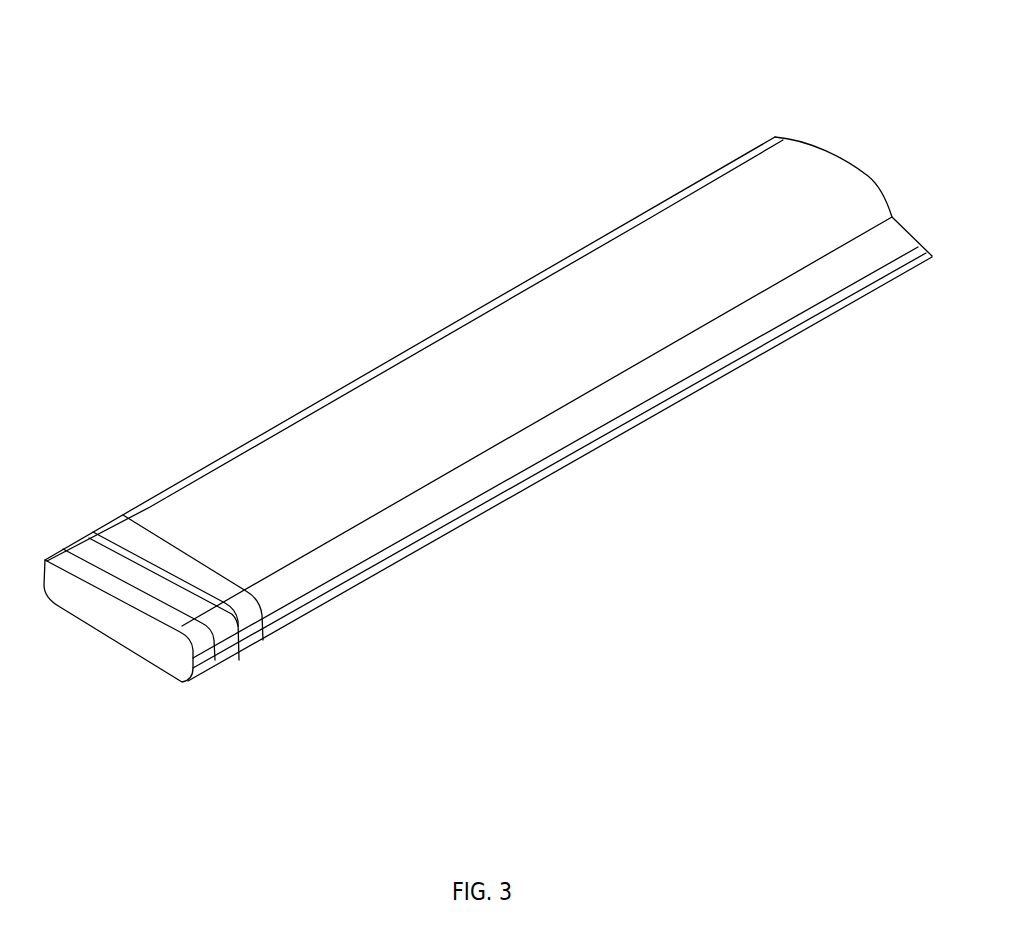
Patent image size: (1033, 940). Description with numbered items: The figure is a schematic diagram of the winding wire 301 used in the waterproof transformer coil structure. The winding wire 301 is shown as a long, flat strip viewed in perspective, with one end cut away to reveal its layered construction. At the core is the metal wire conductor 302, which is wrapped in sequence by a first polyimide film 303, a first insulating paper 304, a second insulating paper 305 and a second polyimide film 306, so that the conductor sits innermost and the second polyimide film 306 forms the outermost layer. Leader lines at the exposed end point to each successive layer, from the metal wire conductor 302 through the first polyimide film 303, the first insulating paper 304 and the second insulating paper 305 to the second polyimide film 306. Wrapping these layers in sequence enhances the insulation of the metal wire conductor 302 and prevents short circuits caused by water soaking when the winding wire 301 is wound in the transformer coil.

The winding wire 301 is at (493, 229).
The metal wire conductor 302 is at (212, 668).
The first polyimide film 303 is at (235, 655).
The first insulating paper 304 is at (246, 644).
The second insulating paper 305 is at (254, 606).
The second polyimide film 306 is at (257, 562).